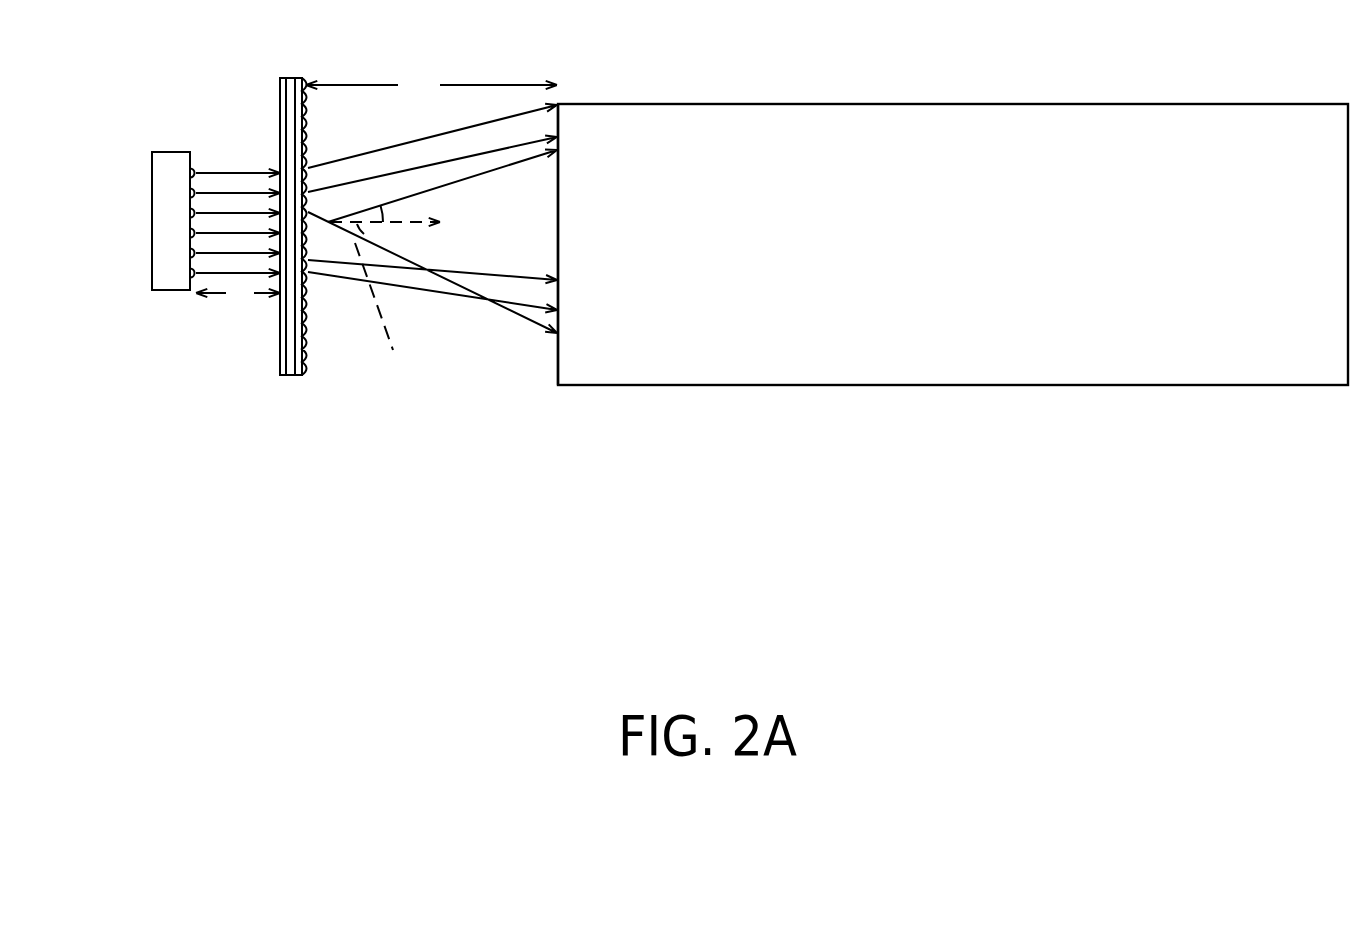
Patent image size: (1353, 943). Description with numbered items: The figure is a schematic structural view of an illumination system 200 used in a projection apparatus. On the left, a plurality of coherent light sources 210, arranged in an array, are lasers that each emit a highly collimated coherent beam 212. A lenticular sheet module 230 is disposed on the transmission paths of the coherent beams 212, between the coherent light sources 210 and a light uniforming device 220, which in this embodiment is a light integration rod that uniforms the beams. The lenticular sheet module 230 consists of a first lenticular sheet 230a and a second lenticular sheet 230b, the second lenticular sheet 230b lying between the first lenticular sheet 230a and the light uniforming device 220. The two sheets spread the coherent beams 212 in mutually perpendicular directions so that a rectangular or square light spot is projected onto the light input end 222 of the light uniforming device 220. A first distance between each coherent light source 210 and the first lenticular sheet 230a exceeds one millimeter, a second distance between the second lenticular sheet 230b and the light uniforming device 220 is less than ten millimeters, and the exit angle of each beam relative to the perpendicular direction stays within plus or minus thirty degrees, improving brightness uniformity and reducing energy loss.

The illumination system 200 is at (700, 340).
The coherent light source 210 is at (193, 172).
The coherent beam 212 is at (234, 170).
The light uniforming device 220 is at (1008, 345).
The light input end 222 is at (557, 360).
The lenticular sheet module 230 is at (286, 296).
The first lenticular sheet 230a is at (290, 375).
The second lenticular sheet 230b is at (304, 372).